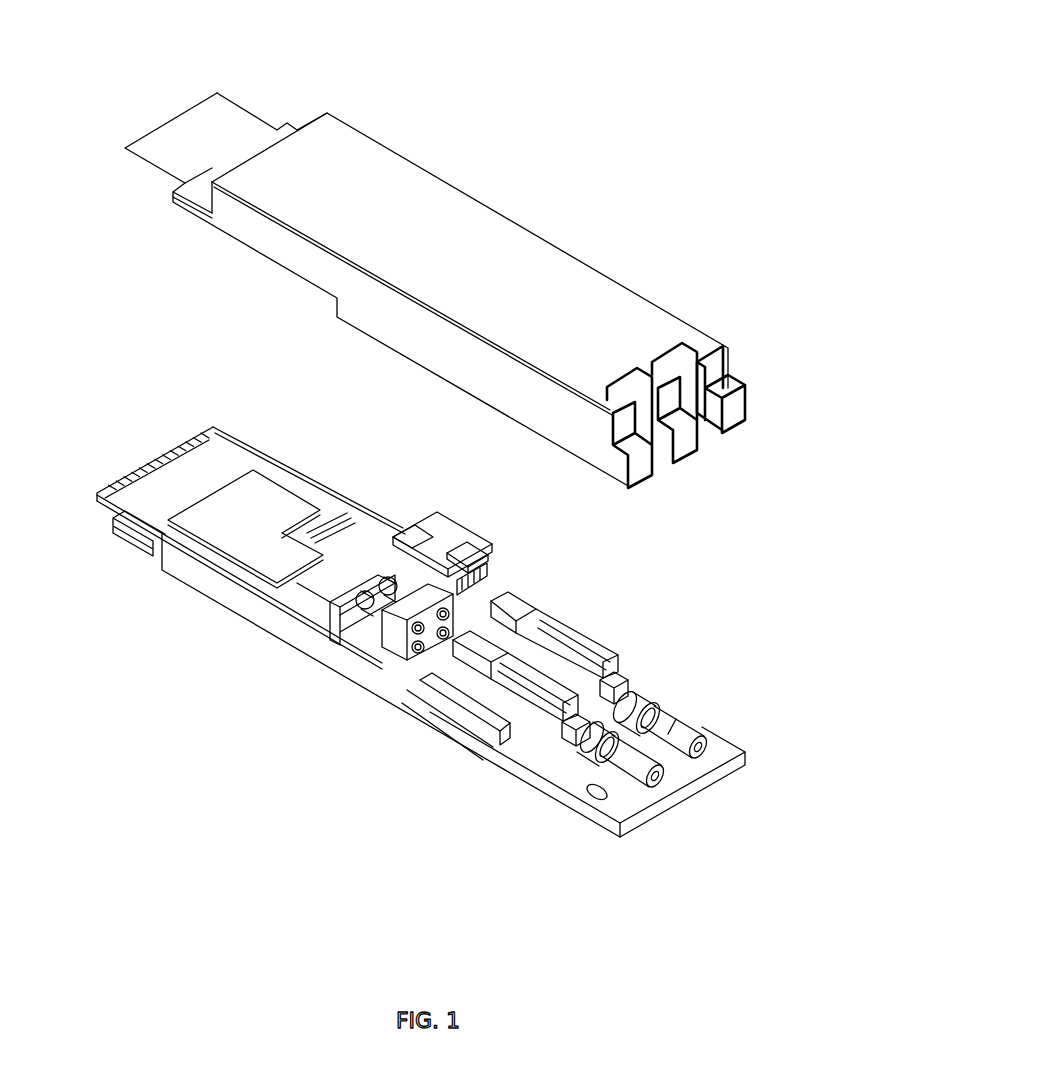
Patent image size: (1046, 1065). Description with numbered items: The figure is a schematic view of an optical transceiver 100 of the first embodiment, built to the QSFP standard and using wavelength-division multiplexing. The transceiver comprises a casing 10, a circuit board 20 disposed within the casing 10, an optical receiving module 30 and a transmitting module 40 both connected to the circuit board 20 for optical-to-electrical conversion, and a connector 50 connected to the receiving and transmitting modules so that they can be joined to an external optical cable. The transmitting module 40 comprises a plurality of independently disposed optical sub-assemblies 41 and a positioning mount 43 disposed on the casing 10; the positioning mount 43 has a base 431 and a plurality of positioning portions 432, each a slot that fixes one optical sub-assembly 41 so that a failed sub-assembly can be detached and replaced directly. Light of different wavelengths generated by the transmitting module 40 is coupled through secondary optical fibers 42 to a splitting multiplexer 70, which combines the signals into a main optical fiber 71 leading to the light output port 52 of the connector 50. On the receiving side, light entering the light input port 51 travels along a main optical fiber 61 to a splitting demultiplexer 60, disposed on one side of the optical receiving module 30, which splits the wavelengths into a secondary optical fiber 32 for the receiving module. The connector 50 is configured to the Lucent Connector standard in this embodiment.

The optical transceiver 100 is at (573, 135).
The casing 10 is at (738, 422).
The circuit board 20 is at (148, 535).
The optical receiving module 30 is at (492, 556).
The secondary optical fiber 32 is at (488, 585).
The transmitting module 40 is at (338, 611).
The optical sub-assembly 41 is at (348, 647).
The secondary optical fiber 42 is at (440, 636).
The positioning mount 43 is at (423, 584).
The base 431 is at (437, 563).
The positioning portion 432 is at (414, 650).
The connector 50 is at (651, 798).
The light input port 51 is at (704, 768).
The light output port 52 is at (660, 783).
The splitting demultiplexer 60 is at (588, 643).
The main optical fiber 61 is at (627, 694).
The splitting multiplexer 70 is at (528, 693).
The main optical fiber 71 is at (568, 757).